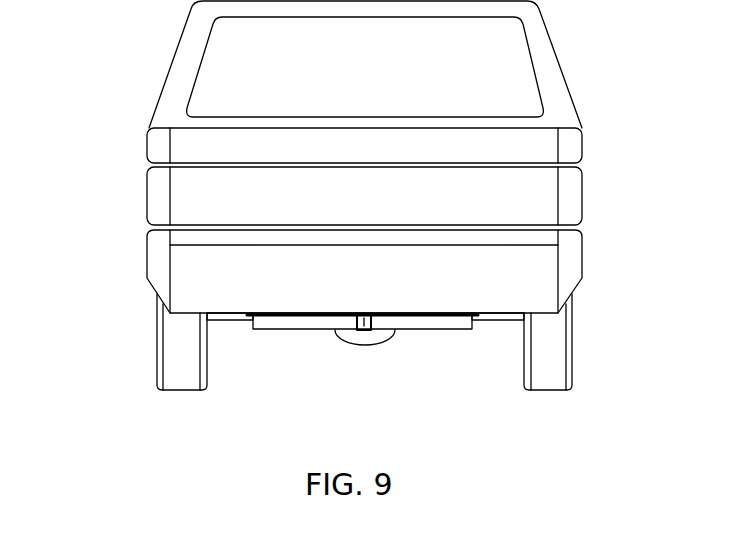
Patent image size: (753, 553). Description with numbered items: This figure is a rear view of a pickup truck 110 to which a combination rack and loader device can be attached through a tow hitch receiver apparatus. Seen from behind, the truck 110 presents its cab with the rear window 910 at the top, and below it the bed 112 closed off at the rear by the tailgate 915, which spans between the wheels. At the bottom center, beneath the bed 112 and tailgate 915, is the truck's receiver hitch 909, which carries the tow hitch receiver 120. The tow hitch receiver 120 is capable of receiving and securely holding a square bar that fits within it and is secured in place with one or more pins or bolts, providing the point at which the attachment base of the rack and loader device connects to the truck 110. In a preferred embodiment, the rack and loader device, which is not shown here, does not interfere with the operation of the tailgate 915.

The pickup truck 110 is at (190, 23).
The rear window 910 is at (512, 60).
The bed 112 is at (582, 143).
The tailgate 915 is at (182, 198).
The receiver hitch 909 is at (323, 332).
The tow hitch receiver 120 is at (361, 328).